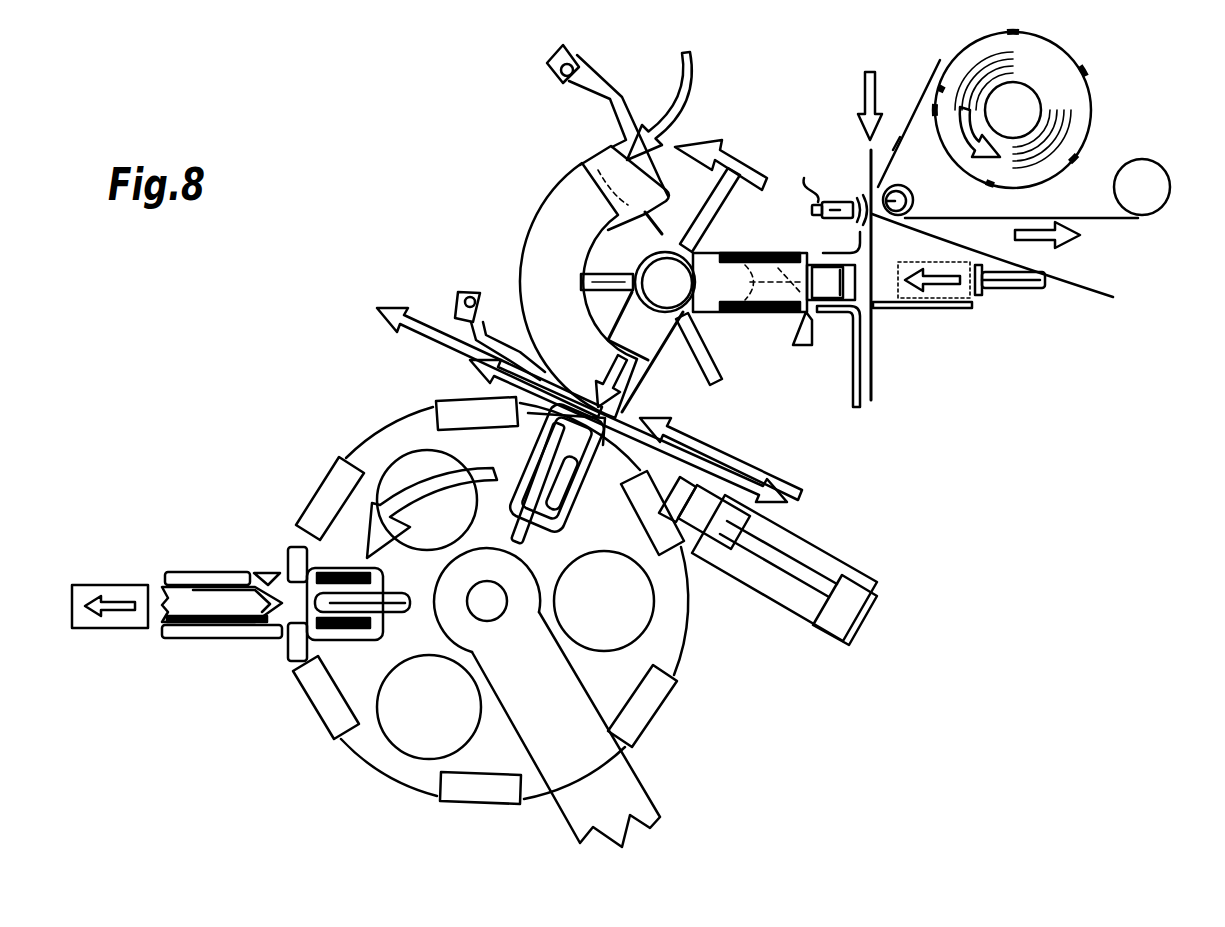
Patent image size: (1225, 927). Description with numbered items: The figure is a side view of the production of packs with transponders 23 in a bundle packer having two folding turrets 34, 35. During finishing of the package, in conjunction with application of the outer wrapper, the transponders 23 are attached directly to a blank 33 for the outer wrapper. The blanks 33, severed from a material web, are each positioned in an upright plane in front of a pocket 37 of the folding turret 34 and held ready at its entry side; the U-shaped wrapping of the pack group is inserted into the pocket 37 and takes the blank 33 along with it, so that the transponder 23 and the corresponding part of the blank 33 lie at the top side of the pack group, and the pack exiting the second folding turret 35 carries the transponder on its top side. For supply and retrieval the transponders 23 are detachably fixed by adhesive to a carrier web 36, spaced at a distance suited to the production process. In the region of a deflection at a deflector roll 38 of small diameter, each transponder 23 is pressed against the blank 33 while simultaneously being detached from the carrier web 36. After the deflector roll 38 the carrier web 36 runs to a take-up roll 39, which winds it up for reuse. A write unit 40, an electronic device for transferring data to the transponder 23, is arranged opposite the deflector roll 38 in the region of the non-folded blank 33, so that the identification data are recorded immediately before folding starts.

The transponder 23 is at (940, 60).
The blank 33 is at (873, 340).
The folding turret 34 is at (540, 165).
The folding turret 35 is at (290, 705).
The carrier web 36 is at (1075, 212).
The pocket 37 is at (760, 312).
The deflector roll 38 is at (856, 186).
The take-up roll 39 is at (1157, 208).
The write unit 40 is at (826, 198).